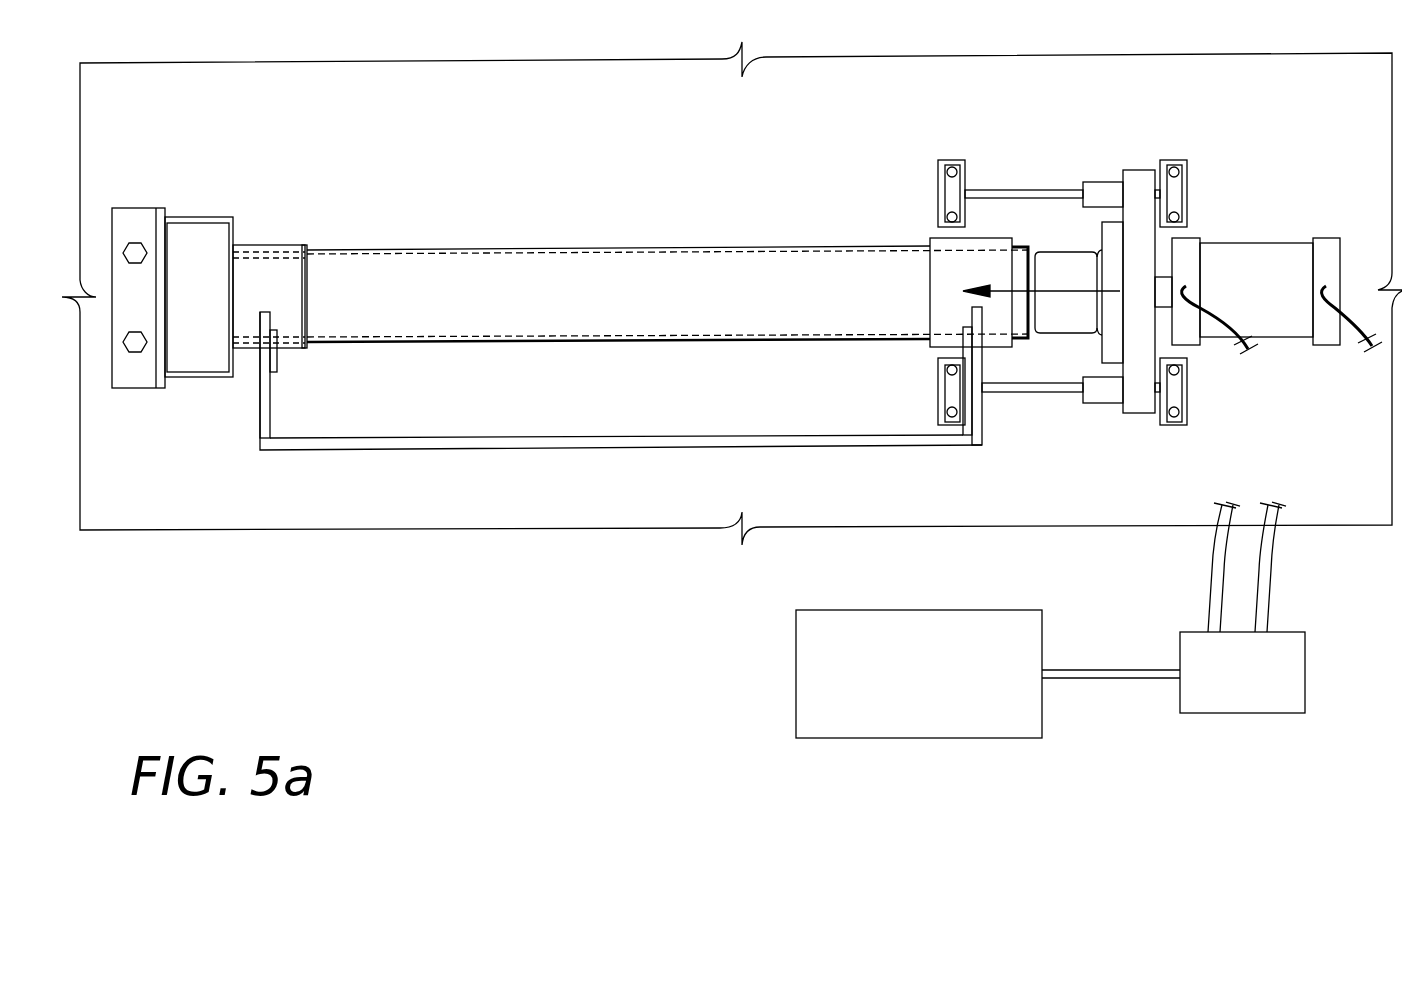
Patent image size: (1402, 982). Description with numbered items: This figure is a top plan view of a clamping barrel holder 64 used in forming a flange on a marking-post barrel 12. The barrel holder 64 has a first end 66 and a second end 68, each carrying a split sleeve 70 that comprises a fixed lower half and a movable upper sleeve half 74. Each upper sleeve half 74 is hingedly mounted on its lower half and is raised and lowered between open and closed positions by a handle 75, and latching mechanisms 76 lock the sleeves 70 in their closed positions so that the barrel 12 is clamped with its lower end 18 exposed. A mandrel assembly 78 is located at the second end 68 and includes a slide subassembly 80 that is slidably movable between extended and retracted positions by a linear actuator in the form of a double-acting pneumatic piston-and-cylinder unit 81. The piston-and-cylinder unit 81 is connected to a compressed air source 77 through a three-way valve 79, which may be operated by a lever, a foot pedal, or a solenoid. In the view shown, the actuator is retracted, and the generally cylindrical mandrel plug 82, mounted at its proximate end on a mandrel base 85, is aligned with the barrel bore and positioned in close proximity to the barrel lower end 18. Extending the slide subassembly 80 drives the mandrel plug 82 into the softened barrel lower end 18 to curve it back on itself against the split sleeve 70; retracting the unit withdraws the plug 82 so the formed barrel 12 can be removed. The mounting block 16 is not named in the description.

The barrel 12 is at (667, 294).
The mounting block 16 is at (233, 278).
The barrel lower end 18 is at (1031, 271).
The clamping barrel holder 64 is at (732, 293).
The first end 66 is at (113, 372).
The second end 68 is at (1340, 255).
The split sleeve 70 is at (304, 245).
The upper sleeve half 74 is at (269, 296).
The handle 75 is at (260, 451).
The latching mechanism 76 is at (276, 372).
The compressed air source 77 is at (796, 612).
The mandrel assembly 78 is at (1078, 239).
The three-way valve 79 is at (1305, 702).
The slide subassembly 80 is at (1062, 313).
The piston-and-cylinder unit 81 is at (1268, 296).
The mandrel plug 82 is at (1068, 292).
The mandrel base 85 is at (1102, 363).